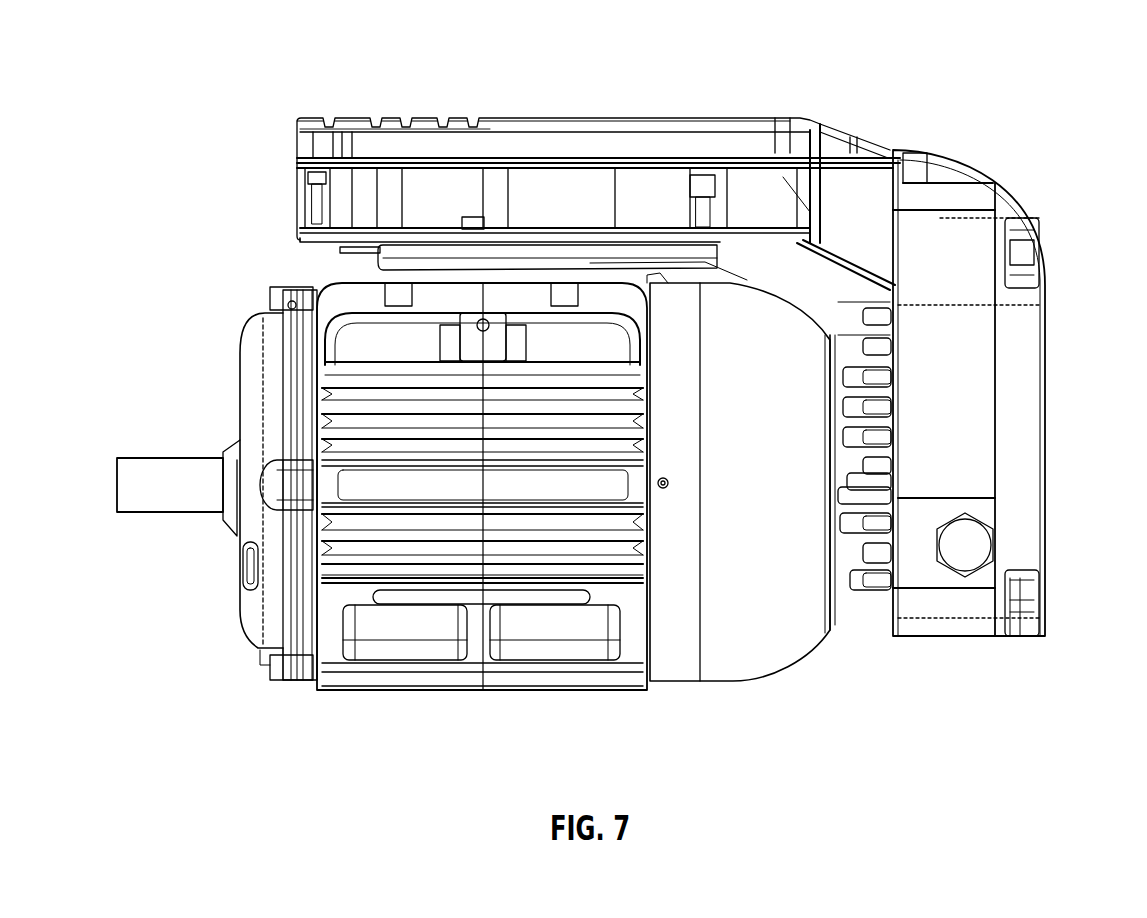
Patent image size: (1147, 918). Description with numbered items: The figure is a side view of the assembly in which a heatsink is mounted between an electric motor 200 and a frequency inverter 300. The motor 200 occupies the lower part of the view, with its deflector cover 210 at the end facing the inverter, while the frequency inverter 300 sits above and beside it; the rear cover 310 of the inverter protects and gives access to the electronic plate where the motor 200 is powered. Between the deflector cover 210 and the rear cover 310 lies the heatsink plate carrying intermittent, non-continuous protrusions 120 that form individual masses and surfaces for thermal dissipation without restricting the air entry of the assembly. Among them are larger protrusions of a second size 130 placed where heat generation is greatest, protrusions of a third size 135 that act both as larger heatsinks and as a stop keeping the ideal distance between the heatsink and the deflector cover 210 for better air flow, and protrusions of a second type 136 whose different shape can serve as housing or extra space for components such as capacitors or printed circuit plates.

The frequency inverter 300 is at (575, 85).
The rear cover 310 is at (1045, 408).
The protrusions of a second size 130 is at (896, 452).
The protrusions 120 is at (873, 592).
The protrusions of a second type 136 is at (856, 590).
The deflector cover 210 is at (727, 658).
The protrusions of a third size 135 is at (822, 618).
The electric motor 200 is at (247, 626).